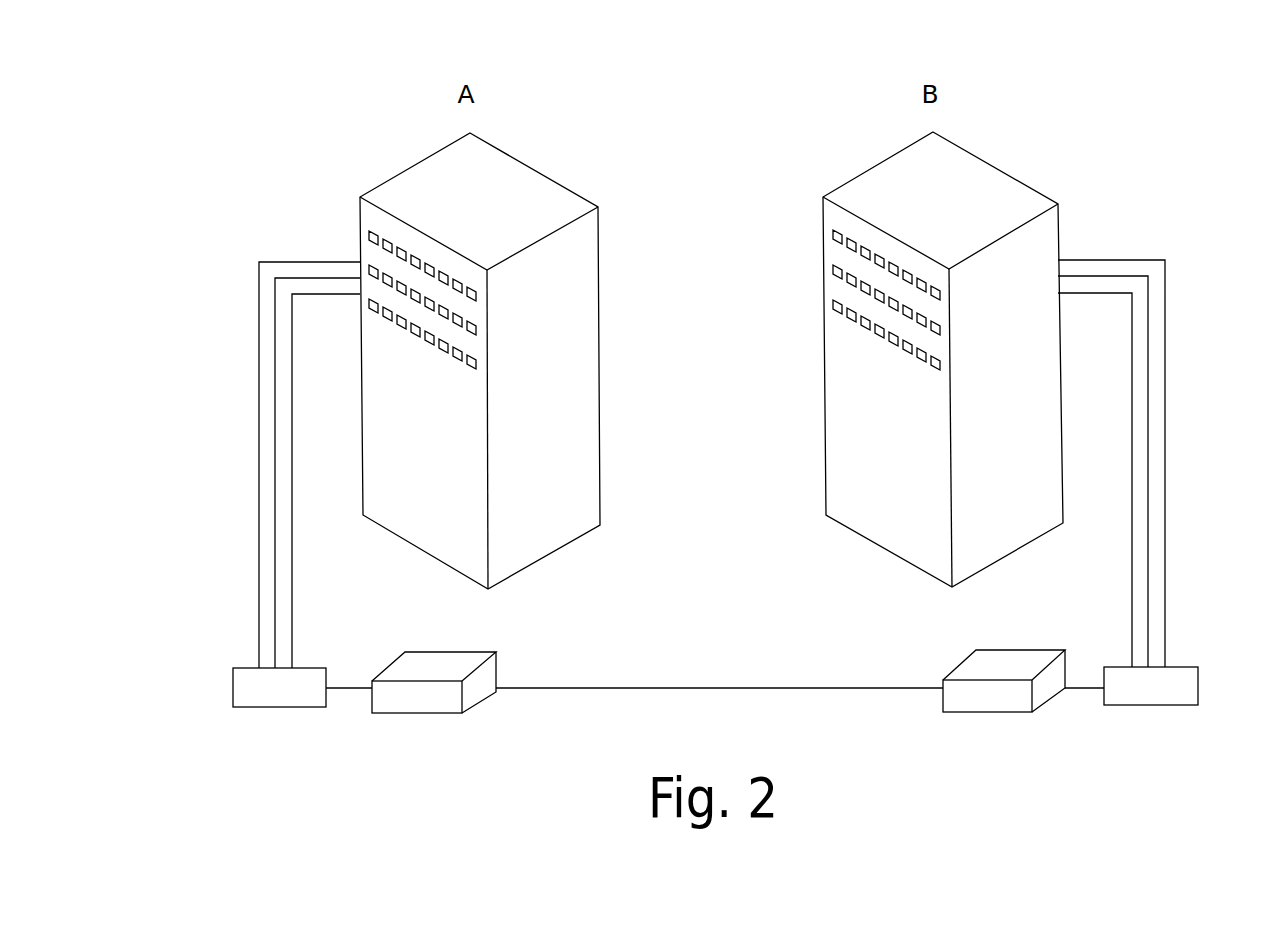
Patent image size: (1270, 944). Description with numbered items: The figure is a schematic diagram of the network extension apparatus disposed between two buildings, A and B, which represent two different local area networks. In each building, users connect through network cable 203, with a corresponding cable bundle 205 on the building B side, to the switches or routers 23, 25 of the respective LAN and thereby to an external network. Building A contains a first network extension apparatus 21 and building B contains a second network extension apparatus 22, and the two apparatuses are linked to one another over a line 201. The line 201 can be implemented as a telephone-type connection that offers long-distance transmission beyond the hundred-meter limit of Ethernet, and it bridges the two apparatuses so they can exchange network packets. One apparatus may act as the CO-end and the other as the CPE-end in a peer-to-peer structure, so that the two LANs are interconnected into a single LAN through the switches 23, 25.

The line 201 is at (793, 687).
The network cable 203 is at (298, 262).
The RJ-45 network cables (rack B) 205 is at (1101, 260).
The first network extension apparatus 21 is at (414, 714).
The second network extension apparatus 22 is at (986, 713).
The switch 23 is at (268, 708).
The switch 25 is at (1150, 706).